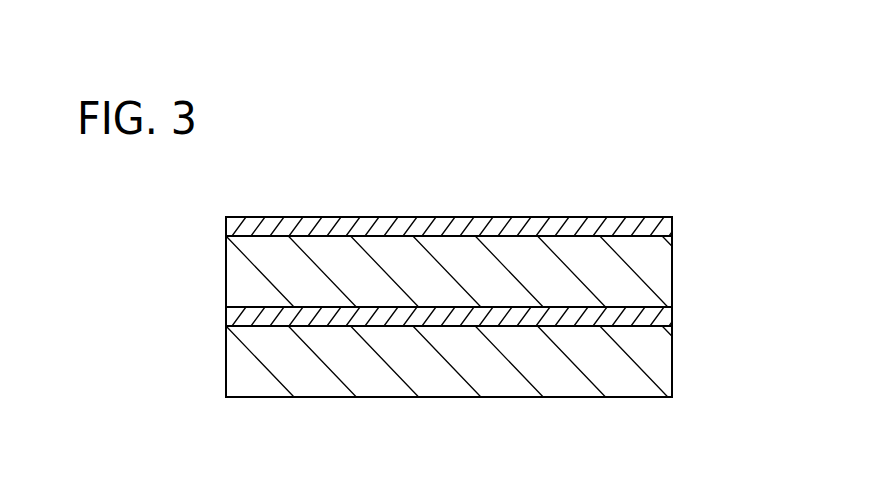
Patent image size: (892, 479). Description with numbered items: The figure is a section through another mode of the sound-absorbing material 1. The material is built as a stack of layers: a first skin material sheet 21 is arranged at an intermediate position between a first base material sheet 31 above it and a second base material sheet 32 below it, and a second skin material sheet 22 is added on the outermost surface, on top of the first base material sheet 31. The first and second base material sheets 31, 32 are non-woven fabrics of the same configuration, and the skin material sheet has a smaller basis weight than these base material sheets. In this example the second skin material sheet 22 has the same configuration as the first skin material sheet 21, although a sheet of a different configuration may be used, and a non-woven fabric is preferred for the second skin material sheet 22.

The sound-absorbing material 1 is at (609, 184).
The second skin material sheet 22 is at (662, 230).
The first base material sheet 31 is at (663, 273).
The first skin material sheet 21 is at (662, 317).
The second base material sheet 32 is at (663, 363).